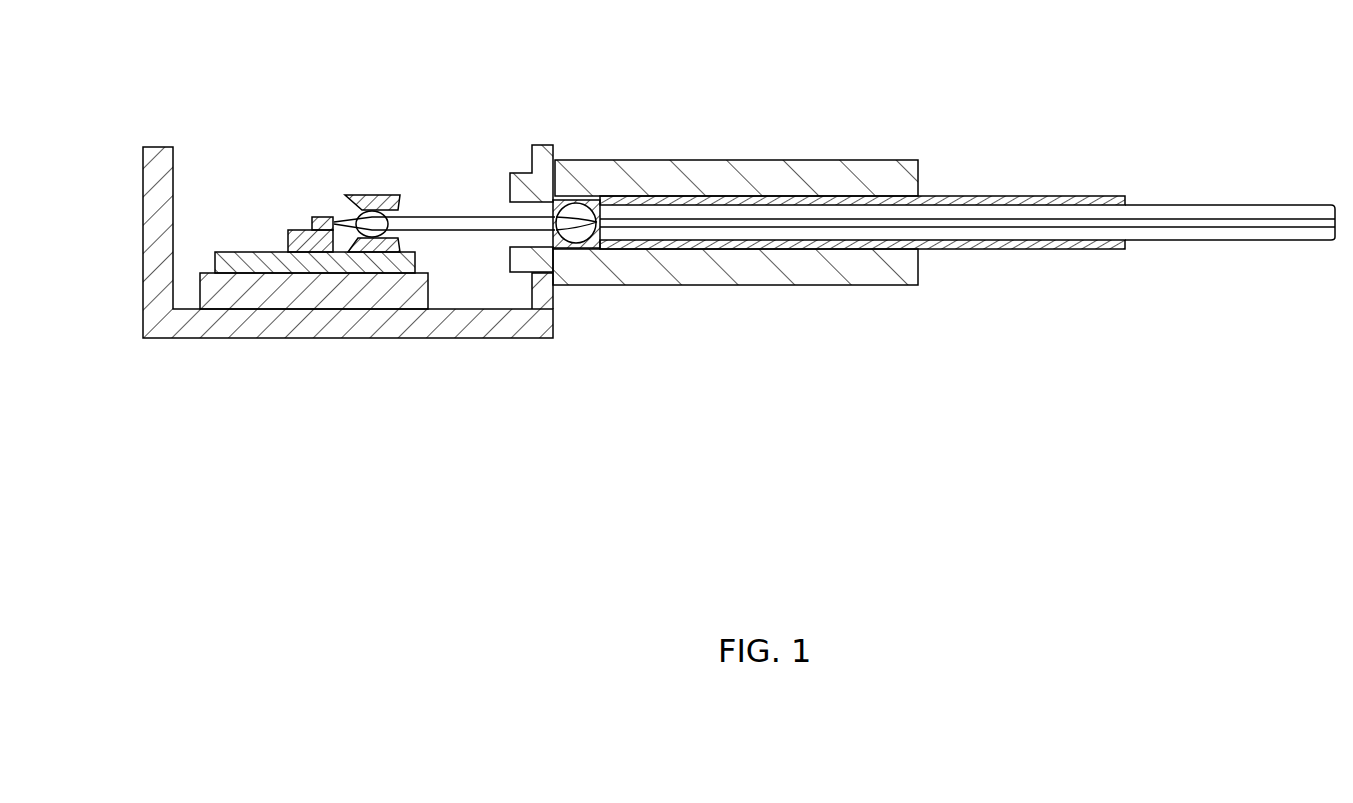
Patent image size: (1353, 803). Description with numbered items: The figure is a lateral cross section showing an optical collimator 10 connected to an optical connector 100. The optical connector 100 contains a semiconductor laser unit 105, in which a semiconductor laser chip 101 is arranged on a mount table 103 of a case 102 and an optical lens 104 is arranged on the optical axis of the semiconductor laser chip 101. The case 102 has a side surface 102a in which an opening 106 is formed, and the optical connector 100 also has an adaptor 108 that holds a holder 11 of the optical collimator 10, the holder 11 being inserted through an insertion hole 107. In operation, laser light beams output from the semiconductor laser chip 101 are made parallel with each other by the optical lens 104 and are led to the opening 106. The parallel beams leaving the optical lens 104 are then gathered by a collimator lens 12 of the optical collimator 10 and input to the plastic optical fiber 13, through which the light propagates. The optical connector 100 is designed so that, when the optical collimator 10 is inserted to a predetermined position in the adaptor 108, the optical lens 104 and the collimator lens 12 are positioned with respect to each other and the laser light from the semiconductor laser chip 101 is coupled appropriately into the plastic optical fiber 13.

The optical connector 100 is at (201, 99).
The semiconductor laser chip 101 is at (318, 217).
The case 102 is at (142, 195).
The side surface 102a is at (553, 308).
The mount table 103 is at (288, 245).
The optical lens 104 is at (372, 195).
The semiconductor laser unit 105 is at (240, 341).
The opening 106 is at (510, 210).
The insertion hole 107 is at (939, 171).
The adaptor 108 is at (755, 161).
The optical collimator 10 is at (1050, 158).
The holder 11 is at (995, 249).
The collimator lens 12 is at (577, 202).
The plastic optical fiber 13 is at (1222, 203).